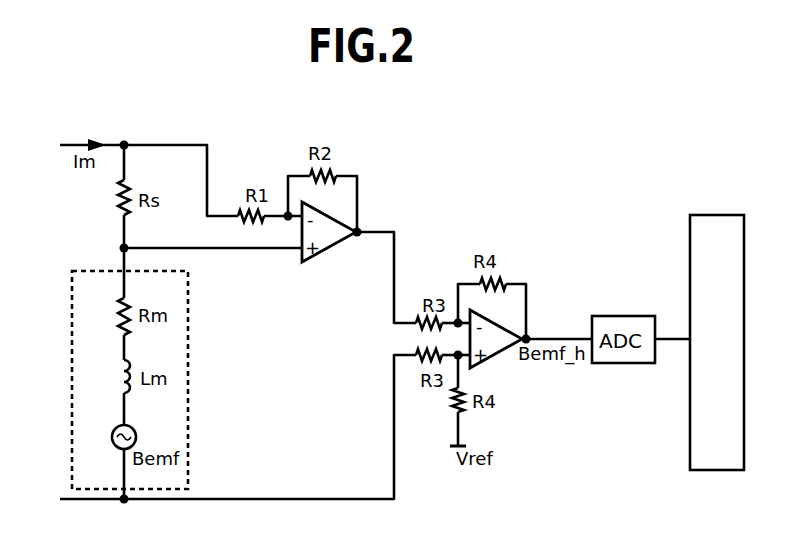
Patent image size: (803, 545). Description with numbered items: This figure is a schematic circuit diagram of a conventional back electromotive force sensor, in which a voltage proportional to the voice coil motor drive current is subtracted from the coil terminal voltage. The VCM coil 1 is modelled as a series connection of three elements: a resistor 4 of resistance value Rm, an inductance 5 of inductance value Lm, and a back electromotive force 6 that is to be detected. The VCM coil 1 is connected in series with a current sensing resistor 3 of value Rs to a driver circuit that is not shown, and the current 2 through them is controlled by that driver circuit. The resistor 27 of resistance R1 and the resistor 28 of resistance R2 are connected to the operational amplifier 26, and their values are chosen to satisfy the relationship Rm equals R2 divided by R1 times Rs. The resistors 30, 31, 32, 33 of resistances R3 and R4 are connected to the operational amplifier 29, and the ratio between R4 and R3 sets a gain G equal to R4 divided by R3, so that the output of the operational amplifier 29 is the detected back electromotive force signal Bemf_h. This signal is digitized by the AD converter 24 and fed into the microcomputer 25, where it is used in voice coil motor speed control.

The VCM coil 1 is at (100, 488).
The current 2 is at (60, 148).
The current sensing resistor 3 is at (118, 200).
The resistor 4 is at (122, 308).
The inductance 5 is at (122, 371).
The back electromotive force 6 is at (113, 438).
The AD converter 24 is at (604, 316).
The microcomputer 25 is at (688, 436).
The operational amplifier 26 is at (313, 260).
The resistor 27 is at (241, 212).
The resistor 28 is at (338, 169).
The operational amplifier 29 is at (490, 360).
The resistor 30 is at (397, 305).
The resistor 31 is at (422, 364).
The resistor 32 is at (468, 412).
The resistor 33 is at (505, 268).